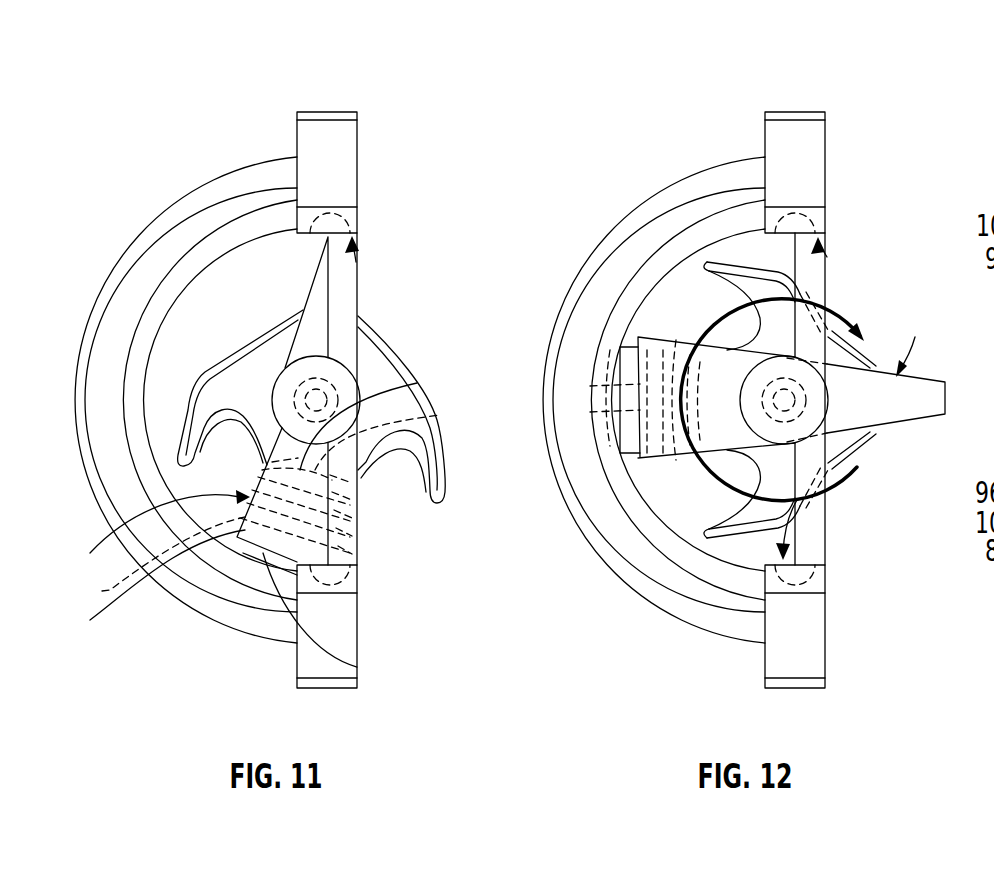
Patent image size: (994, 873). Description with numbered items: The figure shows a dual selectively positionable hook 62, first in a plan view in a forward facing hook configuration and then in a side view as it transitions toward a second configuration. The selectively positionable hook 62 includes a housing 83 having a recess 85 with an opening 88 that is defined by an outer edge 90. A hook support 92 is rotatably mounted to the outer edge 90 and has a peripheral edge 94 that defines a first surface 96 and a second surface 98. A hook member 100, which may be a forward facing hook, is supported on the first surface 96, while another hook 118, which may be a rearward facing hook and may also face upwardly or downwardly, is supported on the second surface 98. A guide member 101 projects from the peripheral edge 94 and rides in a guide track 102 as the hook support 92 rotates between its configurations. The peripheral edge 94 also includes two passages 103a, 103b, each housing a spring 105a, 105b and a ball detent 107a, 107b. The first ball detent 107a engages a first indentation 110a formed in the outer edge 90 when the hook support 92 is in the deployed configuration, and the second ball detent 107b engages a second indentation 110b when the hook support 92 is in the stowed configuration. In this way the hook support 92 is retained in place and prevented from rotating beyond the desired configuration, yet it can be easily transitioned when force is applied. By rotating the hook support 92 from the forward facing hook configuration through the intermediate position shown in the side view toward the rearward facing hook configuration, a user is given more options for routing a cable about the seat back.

In FIG. 11, the selectively positionable hook 62 is at (406, 730).
In FIG. 12, the selectively positionable hook 62 is at (876, 730).
In FIG. 11, the housing 83 is at (329, 112).
In FIG. 12, the housing 83 is at (797, 112).
In FIG. 11, the recess 85 is at (257, 257).
In FIG. 12, the recess 85 is at (650, 257).
In FIG. 11, the opening 88 is at (356, 262).
In FIG. 12, the opening 88 is at (827, 257).
In FIG. 11, the outer edge 90 is at (355, 558).
In FIG. 12, the outer edge 90 is at (820, 562).
In FIG. 11, the hook support 92 is at (148, 530).
In FIG. 12, the hook support 92 is at (914, 340).
In FIG. 11, the peripheral edge 94 is at (217, 568).
In FIG. 12, the peripheral edge 94 is at (632, 343).
In FIG. 12, the first surface 96 is at (897, 428).
In FIG. 11, the second surface 98 is at (307, 303).
In FIG. 12, the second surface 98 is at (940, 382).
In FIG. 11, the hook member 100 is at (370, 360).
In FIG. 12, the hook member 100 is at (745, 556).
In FIG. 11, the guide member 101 is at (357, 667).
In FIG. 12, the guide member 101 is at (627, 400).
In FIG. 11, the guide track 102 is at (185, 270).
In FIG. 12, the guide track 102 is at (700, 555).
In FIG. 11, the first passage 103a is at (139, 585).
In FIG. 12, the first passage 103a is at (640, 302).
In FIG. 11, the second passage 103b is at (417, 383).
In FIG. 12, the second passage 103b is at (683, 524).
In FIG. 11, the first spring 105a is at (148, 562).
In FIG. 12, the first spring 105a is at (677, 336).
In FIG. 11, the second spring 105b is at (440, 415).
In FIG. 12, the second spring 105b is at (679, 462).
In FIG. 11, the first ball detent 107a is at (283, 545).
In FIG. 12, the first ball detent 107a is at (627, 387).
In FIG. 11, the second ball detent 107b is at (330, 540).
In FIG. 12, the second ball detent 107b is at (627, 452).
In FIG. 11, the first indentation 110a is at (343, 222).
In FIG. 12, the first indentation 110a is at (810, 222).
In FIG. 11, the second indentation 110b is at (345, 580).
In FIG. 12, the second indentation 110b is at (808, 578).
In FIG. 11, the hook 118 is at (266, 367).
In FIG. 12, the hook 118 is at (690, 285).